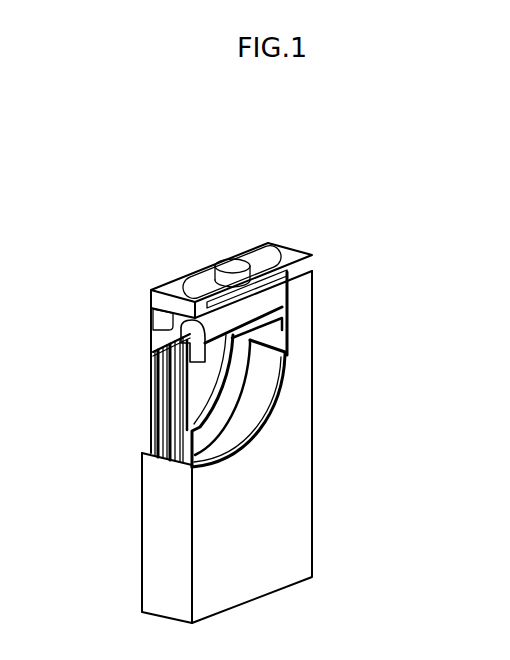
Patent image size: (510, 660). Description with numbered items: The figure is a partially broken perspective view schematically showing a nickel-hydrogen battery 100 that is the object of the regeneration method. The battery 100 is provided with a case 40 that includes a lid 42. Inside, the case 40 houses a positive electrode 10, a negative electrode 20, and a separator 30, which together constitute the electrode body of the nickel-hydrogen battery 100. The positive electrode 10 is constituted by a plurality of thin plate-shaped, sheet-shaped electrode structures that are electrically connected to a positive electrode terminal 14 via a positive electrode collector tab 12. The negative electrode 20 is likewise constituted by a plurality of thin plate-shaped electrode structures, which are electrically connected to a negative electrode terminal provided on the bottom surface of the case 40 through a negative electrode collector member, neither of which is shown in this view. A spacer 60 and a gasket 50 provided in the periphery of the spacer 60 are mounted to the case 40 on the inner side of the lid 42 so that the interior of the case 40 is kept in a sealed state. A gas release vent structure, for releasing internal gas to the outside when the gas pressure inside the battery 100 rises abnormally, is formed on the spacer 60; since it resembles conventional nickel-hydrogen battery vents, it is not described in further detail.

The nickel-hydrogen battery 100 is at (399, 181).
The positive electrode 10 is at (217, 362).
The positive electrode collector tab 12 is at (188, 332).
The positive electrode terminal 14 is at (238, 264).
The negative electrode 20 is at (205, 443).
The separator 30 is at (224, 387).
The case 40 is at (287, 550).
The lid 42 is at (165, 283).
The gasket 50 is at (253, 294).
The spacer 60 is at (162, 320).